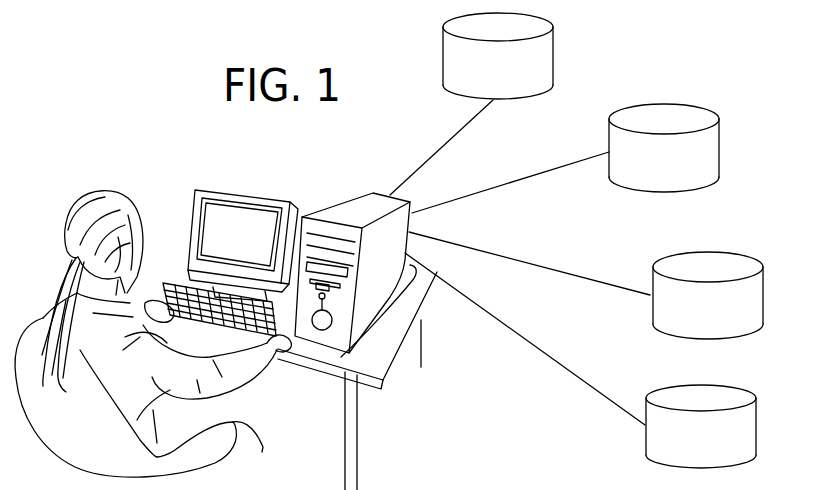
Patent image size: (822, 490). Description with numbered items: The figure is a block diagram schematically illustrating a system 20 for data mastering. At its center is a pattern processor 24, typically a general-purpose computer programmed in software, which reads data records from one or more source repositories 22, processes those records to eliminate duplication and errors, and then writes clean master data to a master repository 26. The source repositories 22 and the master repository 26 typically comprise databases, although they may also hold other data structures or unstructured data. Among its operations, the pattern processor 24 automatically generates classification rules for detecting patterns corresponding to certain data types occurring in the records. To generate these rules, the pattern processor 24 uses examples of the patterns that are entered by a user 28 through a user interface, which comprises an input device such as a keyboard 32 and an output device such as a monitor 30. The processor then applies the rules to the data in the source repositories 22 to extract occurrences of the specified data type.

The system 20 is at (138, 102).
The source repositories 22 is at (553, 52).
The pattern processor 24 is at (355, 208).
The master repository 26 is at (756, 413).
The user 28 is at (82, 221).
The monitor 30 is at (243, 203).
The keyboard 32 is at (190, 287).